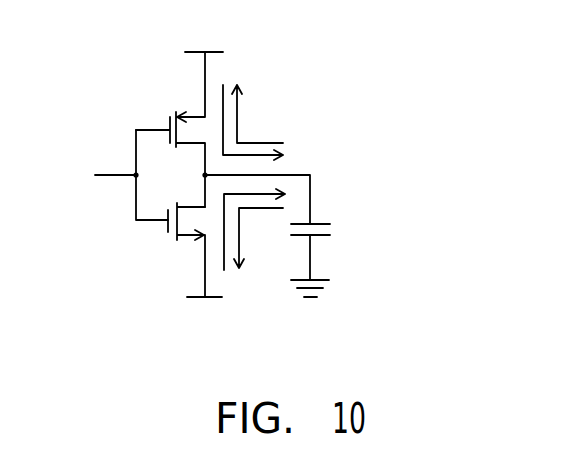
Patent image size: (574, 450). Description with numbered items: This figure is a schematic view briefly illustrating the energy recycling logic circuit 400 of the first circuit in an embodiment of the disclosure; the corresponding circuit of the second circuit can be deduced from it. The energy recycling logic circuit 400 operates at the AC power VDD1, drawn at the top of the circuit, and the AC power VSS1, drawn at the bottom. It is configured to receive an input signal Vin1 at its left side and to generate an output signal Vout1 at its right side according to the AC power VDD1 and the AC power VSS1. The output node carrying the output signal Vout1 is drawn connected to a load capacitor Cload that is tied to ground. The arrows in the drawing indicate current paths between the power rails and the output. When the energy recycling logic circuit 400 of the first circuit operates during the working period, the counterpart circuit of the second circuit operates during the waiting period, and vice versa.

The energy recycling logic circuit 400 is at (240, 187).
The AC power VDD1 is at (202, 69).
The AC power VSS1 is at (203, 286).
The input signal Vin1 is at (108, 175).
The output signal Vout1 is at (291, 190).
The load capacitor Cload is at (341, 259).